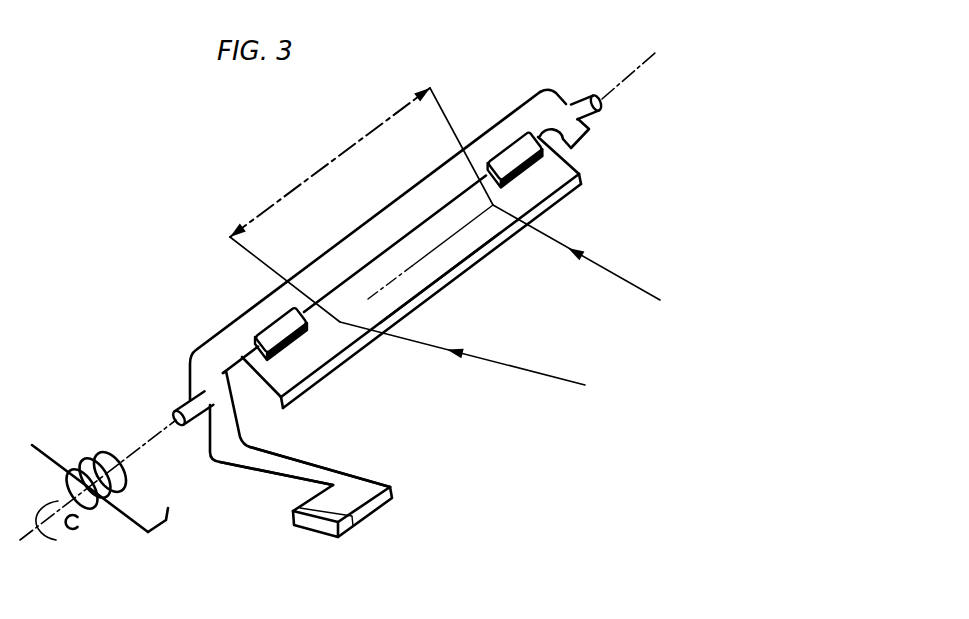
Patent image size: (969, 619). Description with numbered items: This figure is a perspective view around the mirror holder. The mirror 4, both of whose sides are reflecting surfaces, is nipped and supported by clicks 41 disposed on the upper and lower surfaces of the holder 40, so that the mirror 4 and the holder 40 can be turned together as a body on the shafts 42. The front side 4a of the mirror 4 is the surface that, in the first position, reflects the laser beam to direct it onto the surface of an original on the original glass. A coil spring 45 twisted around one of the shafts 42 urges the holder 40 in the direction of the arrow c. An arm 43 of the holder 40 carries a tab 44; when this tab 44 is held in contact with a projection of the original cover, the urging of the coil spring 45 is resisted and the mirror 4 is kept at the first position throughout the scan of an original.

The mirror 4 is at (335, 369).
The front side of the mirror 4a is at (453, 258).
The holder 40 is at (490, 128).
The clicks 41 is at (517, 142).
The shafts 42 is at (587, 96).
The arm 43 is at (292, 459).
The tab 44 is at (307, 527).
The coil spring 45 is at (80, 523).